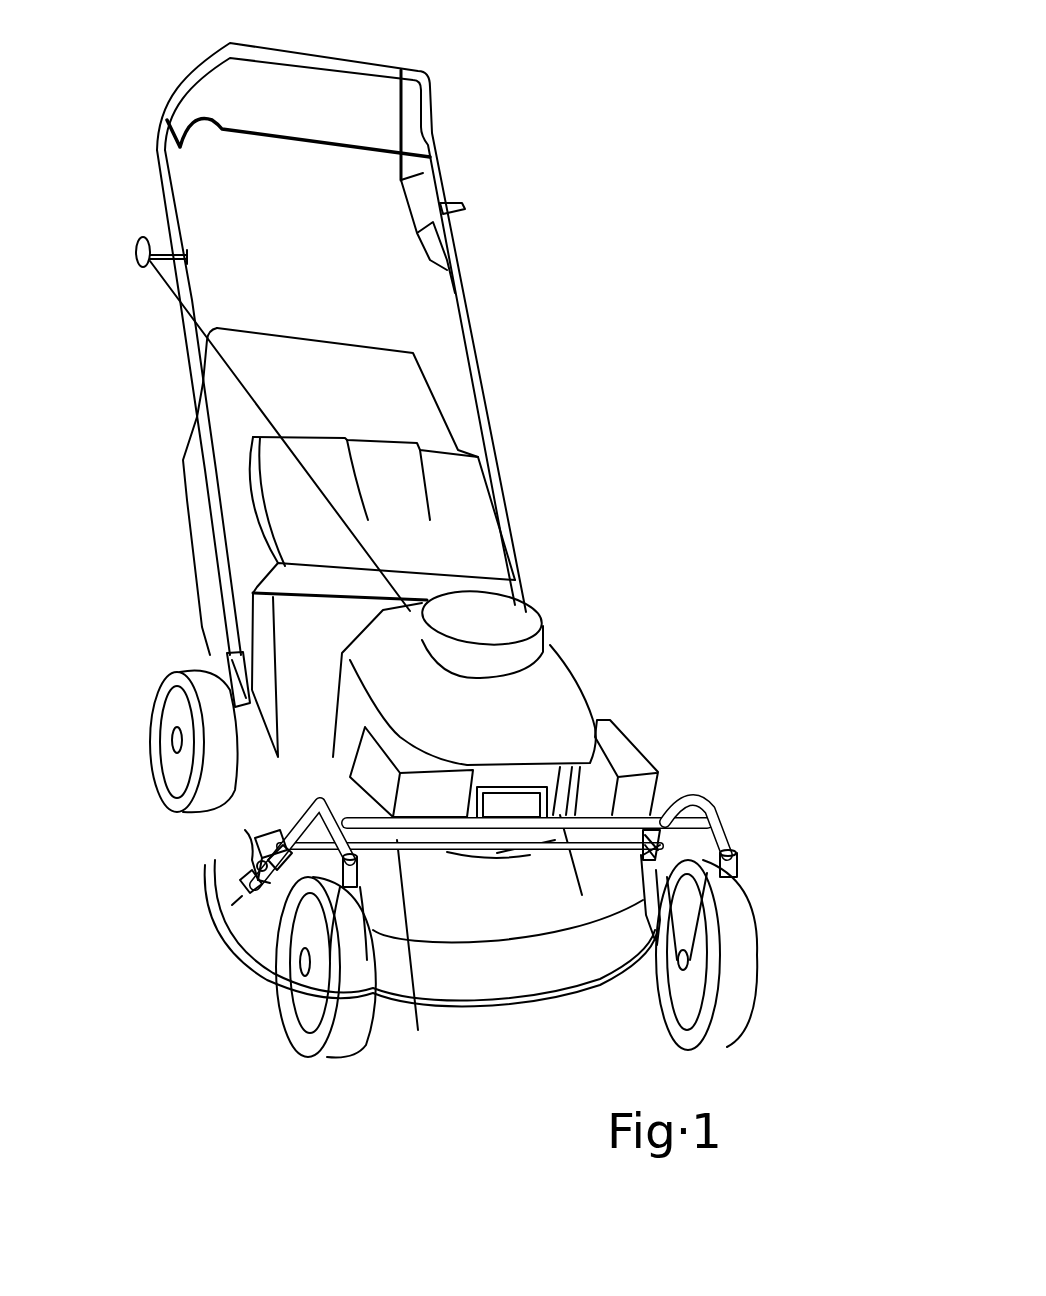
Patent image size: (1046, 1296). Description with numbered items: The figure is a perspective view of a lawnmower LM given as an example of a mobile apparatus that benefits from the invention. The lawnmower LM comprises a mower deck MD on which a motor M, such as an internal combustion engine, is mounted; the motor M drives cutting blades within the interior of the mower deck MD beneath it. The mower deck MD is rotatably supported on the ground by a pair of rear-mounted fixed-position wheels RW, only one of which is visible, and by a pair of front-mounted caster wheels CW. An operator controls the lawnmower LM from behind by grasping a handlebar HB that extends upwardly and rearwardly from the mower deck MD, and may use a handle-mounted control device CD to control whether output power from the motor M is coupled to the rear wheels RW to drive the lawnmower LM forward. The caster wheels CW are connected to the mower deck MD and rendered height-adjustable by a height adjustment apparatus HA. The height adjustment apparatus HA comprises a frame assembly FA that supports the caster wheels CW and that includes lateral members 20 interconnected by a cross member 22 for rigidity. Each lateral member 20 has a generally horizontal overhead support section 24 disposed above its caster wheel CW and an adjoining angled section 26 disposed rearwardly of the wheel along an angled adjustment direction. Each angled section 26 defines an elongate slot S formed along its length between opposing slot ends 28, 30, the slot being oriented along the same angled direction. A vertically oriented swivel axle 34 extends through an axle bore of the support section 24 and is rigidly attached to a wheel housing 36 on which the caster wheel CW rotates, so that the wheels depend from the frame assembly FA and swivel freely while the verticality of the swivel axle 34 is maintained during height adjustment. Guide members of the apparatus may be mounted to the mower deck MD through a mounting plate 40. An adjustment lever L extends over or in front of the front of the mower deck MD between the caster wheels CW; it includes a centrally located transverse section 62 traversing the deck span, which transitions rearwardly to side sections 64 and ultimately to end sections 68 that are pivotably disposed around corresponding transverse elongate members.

The lawnmower LM is at (673, 133).
The handlebar HB is at (182, 72).
The control device CD is at (463, 203).
The motor M is at (557, 657).
The height adjustment apparatus HA is at (778, 792).
The frame assembly FA is at (633, 806).
The rear-mounted fixed-position wheels RW is at (167, 680).
The caster wheel CW is at (757, 953).
The first lateral member 20 is at (703, 793).
The cross member 22 is at (434, 866).
The first overhead support section 24 is at (732, 843).
The first angled section 26 is at (683, 793).
The slot end 28 is at (267, 833).
The slot end 30 is at (230, 910).
The swivel axle 34 is at (739, 866).
The first wheel housing 36 is at (386, 865).
The mounting plate 40 is at (247, 843).
The transverse section 62 is at (502, 853).
The first side section 64 is at (727, 833).
The end section 68 is at (250, 862).
The adjustment lever L is at (455, 848).
The elongate slot S is at (260, 837).
The mower deck MD is at (247, 827).